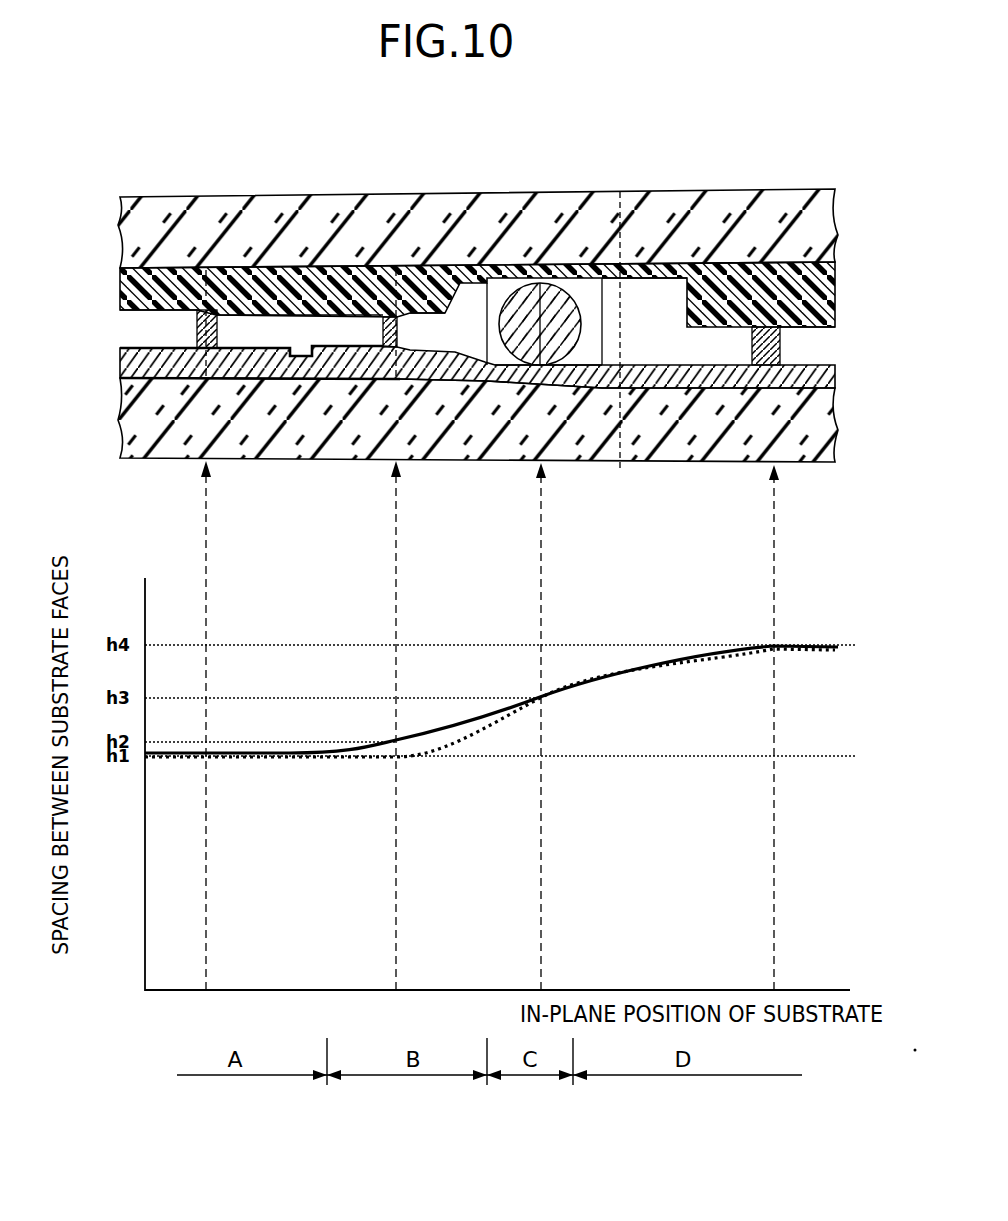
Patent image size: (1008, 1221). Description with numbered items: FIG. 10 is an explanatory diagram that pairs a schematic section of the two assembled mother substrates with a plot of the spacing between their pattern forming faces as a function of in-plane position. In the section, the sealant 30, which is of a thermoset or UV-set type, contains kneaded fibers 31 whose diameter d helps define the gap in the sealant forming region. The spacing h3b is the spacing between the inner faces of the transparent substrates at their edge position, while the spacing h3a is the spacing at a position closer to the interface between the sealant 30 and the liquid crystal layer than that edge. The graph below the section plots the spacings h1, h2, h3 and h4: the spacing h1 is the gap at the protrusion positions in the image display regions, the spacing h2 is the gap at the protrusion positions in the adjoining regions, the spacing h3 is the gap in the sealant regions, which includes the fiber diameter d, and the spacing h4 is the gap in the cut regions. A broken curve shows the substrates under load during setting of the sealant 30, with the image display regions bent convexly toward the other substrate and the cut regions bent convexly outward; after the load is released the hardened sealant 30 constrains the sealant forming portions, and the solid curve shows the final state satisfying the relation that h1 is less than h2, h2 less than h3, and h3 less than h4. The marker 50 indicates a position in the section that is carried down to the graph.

The sealant 30 is at (477, 225).
The fibers 31 is at (544, 252).
The boundary position 50 is at (620, 178).
The spacing h1 is at (120, 296).
The spacing h2 is at (377, 268).
The spacing h3 is at (522, 362).
The spacing h3a is at (445, 326).
The spacing h3b is at (644, 306).
The spacing h4 is at (780, 350).